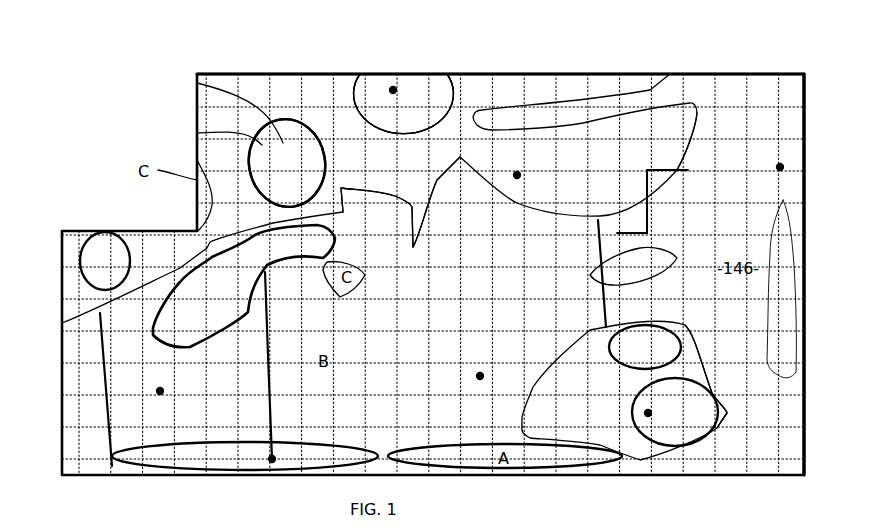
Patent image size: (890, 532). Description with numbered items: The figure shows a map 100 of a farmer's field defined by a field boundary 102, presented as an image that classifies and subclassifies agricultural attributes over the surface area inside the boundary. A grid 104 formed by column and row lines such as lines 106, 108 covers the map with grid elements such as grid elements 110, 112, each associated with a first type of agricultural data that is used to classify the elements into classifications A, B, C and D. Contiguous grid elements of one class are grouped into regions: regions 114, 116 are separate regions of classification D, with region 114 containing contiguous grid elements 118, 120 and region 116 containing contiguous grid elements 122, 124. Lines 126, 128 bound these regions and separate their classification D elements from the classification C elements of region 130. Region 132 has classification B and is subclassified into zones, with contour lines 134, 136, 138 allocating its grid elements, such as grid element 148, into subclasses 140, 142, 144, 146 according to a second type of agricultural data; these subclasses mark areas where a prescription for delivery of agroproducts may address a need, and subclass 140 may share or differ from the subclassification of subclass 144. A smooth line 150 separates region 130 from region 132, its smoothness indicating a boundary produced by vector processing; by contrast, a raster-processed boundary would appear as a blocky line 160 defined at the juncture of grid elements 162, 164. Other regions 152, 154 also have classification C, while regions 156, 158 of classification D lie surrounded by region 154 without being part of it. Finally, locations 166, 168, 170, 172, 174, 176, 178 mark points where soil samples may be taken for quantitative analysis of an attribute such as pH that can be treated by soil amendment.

The map 100 is at (92, 66).
The field boundary 102 is at (252, 73).
The grid 104 is at (792, 85).
The column/row line 106 is at (715, 74).
The column/row line 108 is at (805, 106).
The grid element 110 is at (733, 120).
The grid element 112 is at (733, 157).
The region 114 is at (287, 163).
The region 116 is at (404, 107).
The grid element 118 is at (293, 143).
The grid element 120 is at (197, 83).
The grid element 122 is at (372, 143).
The grid element 124 is at (377, 118).
The line 126 is at (197, 133).
The line 128 is at (447, 73).
The region 130 is at (428, 202).
The region 132 is at (421, 298).
The contour line 134 is at (108, 405).
The contour line 136 is at (273, 313).
The contour line 138 is at (607, 305).
The subclass 140 is at (92, 414).
The subclass 142 is at (218, 388).
The subclass 144 is at (491, 300).
The subclass 146 is at (738, 268).
The grid element 148 is at (415, 412).
The line 150 is at (543, 212).
The region 152 is at (323, 273).
The region 154 is at (567, 352).
The region 156 is at (672, 347).
The region 158 is at (712, 398).
The blocky line 160 is at (649, 200).
The grid element 162 is at (684, 185).
The grid element 164 is at (649, 203).
The location 166 is at (393, 87).
The location 168 is at (157, 391).
The location 170 is at (272, 462).
The location 172 is at (515, 173).
The location 174 is at (479, 373).
The location 176 is at (646, 410).
The location 178 is at (780, 167).